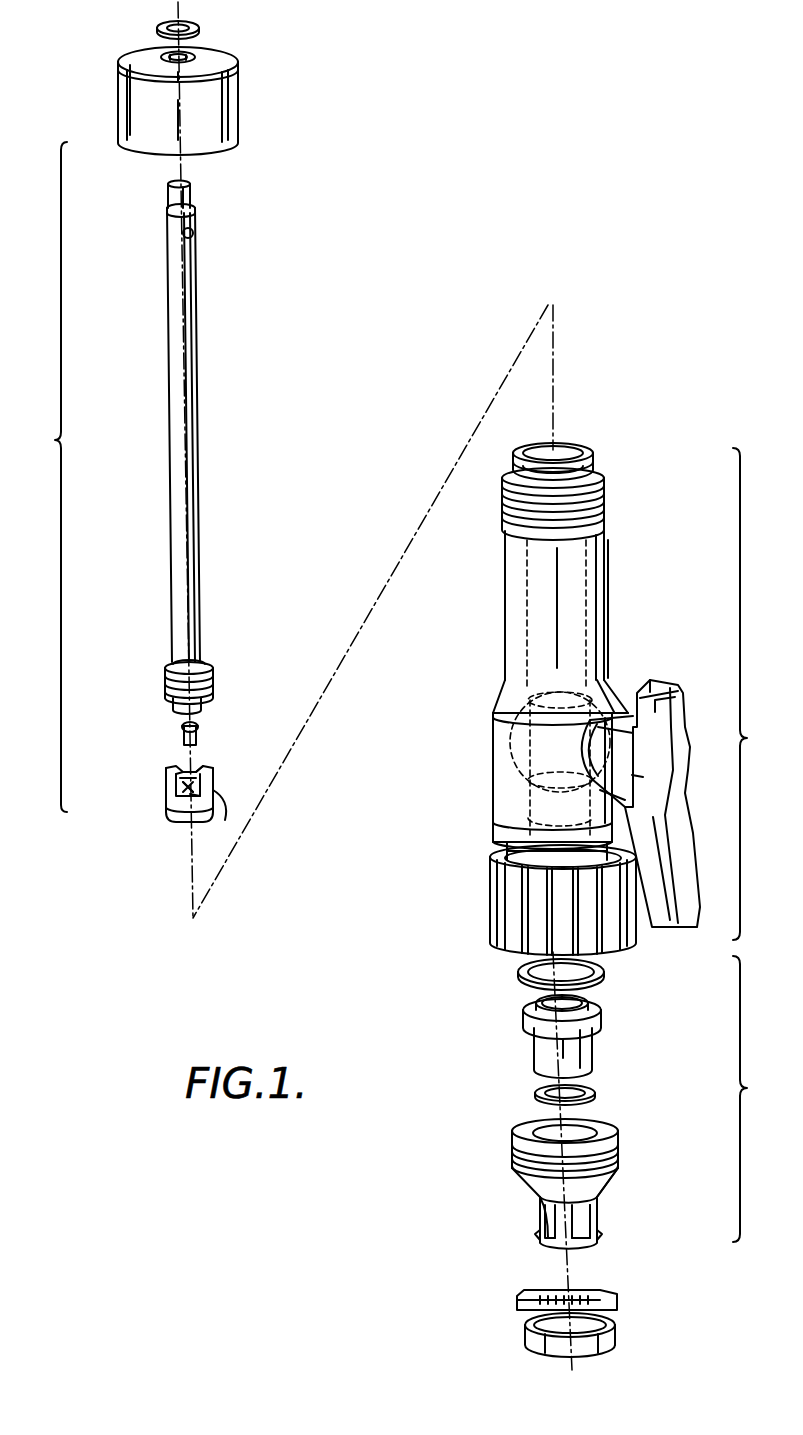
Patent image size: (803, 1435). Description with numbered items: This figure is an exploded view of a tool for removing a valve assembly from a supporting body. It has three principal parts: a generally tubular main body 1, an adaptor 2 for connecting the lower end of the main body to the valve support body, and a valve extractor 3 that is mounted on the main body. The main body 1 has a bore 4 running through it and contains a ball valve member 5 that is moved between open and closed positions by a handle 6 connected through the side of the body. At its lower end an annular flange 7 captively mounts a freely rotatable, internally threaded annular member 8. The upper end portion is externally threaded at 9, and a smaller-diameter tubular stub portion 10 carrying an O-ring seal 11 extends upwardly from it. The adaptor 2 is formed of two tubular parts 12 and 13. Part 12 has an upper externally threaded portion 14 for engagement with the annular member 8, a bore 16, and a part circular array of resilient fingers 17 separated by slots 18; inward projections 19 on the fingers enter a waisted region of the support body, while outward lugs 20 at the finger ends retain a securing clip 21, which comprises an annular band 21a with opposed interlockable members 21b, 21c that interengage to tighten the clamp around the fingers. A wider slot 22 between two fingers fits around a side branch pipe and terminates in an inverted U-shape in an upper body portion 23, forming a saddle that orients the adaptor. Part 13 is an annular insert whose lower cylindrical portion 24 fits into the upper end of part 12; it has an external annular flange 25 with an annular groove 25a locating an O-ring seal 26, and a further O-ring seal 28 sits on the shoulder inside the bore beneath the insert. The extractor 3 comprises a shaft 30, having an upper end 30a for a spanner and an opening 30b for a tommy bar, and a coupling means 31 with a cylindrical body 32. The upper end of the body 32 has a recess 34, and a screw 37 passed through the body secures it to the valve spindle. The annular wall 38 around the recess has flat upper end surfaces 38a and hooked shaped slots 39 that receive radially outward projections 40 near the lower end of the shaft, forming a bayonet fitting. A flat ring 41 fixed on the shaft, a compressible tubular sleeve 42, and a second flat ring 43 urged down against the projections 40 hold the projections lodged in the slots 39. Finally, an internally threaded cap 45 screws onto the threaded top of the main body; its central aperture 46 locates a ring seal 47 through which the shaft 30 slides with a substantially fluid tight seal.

The main body 1 is at (661, 622).
The adaptor 2 is at (751, 1099).
The valve extractor 3 is at (111, 460).
The bore 4 is at (545, 614).
The ball valve member 5 is at (508, 720).
The handle 6 is at (670, 865).
The annular flange 7 is at (523, 887).
The internally threaded annular member 8 is at (490, 895).
The externally threaded portion 9 is at (604, 502).
The tubular stub portion 10 is at (590, 462).
The O-ring seal 11 is at (512, 463).
The adaptor part 12 is at (514, 1171).
The adaptor part 13 is at (604, 1047).
The externally threaded portion 14 is at (512, 1150).
The bore 16 is at (590, 1128).
The resilient fingers 17 is at (545, 1222).
The slots 18 is at (590, 1215).
The projections 19 is at (552, 1238).
The lugs 20 is at (590, 1236).
The securing clip 21 is at (537, 1349).
The annular band 21a is at (610, 1318).
The interlockable member 21b is at (520, 1305).
The interlockable member 21c is at (600, 1291).
The slot 22 is at (534, 1206).
The upper body portion 23 is at (600, 1195).
The lower cylindrical portion 24 is at (534, 1054).
The annular flange 25 is at (524, 1016).
The annular groove 25a is at (589, 1003).
The O-ring seal 26 is at (604, 974).
The O-ring seal 28 is at (535, 1096).
The shaft 30 is at (185, 375).
The upper end of shaft 30a is at (191, 198).
The opening 30b is at (193, 233).
The coupling means 31 is at (162, 813).
The cylindrical body 32 is at (201, 808).
The recess 34 is at (200, 770).
The screw 37 is at (182, 742).
The annular wall 38 is at (190, 790).
The flat upper end surface portions 38a is at (203, 778).
The hooked shaped slots 39 is at (195, 792).
The projections 40 is at (175, 706).
The flat ring 41 is at (200, 665).
The tubular sleeve 42 is at (214, 684).
The second flat ring 43 is at (166, 695).
The cap 45 is at (236, 118).
The central aperture 46 is at (196, 55).
The ring seal 47 is at (199, 30).